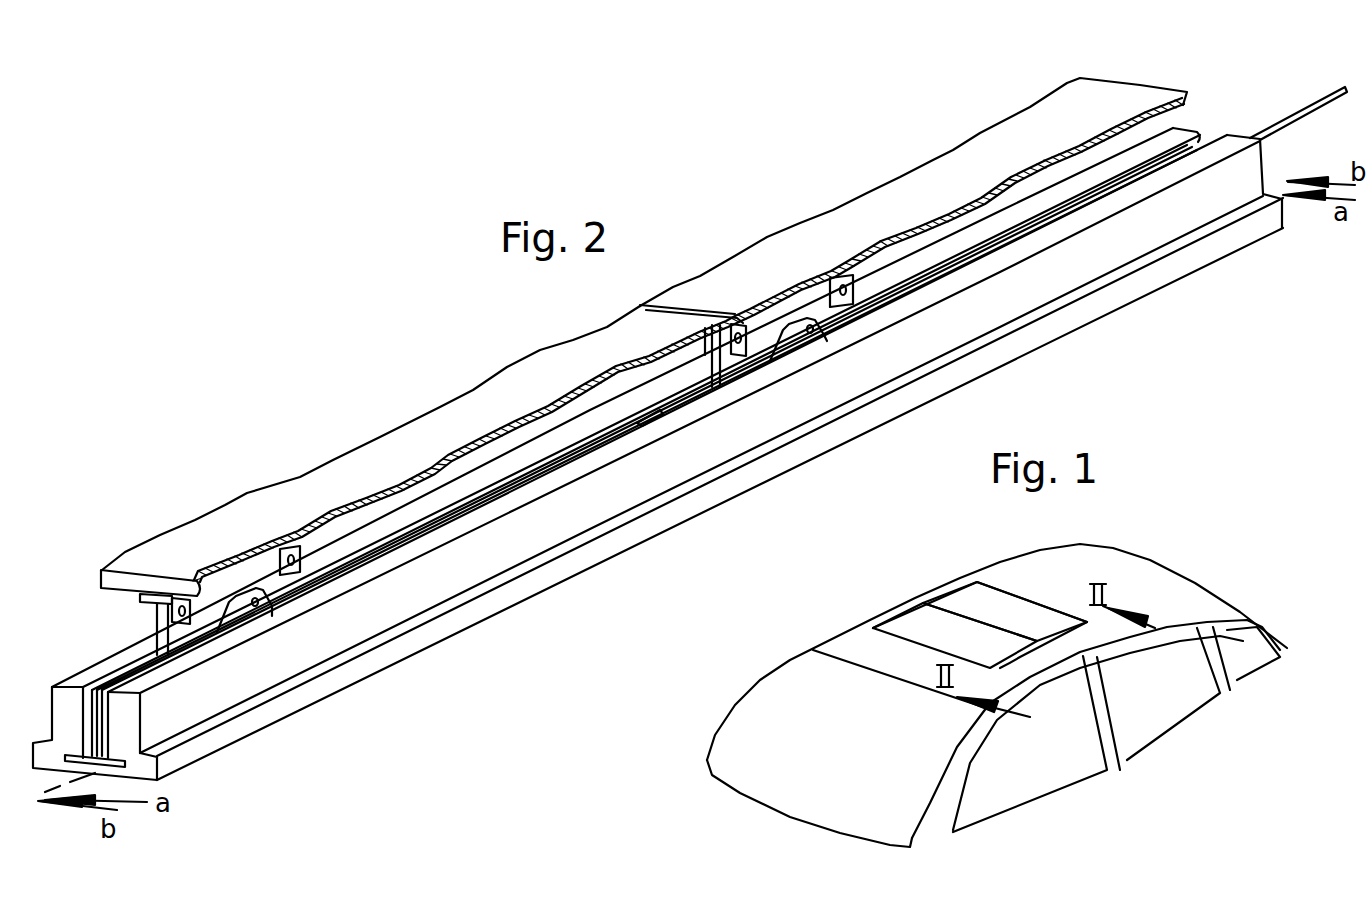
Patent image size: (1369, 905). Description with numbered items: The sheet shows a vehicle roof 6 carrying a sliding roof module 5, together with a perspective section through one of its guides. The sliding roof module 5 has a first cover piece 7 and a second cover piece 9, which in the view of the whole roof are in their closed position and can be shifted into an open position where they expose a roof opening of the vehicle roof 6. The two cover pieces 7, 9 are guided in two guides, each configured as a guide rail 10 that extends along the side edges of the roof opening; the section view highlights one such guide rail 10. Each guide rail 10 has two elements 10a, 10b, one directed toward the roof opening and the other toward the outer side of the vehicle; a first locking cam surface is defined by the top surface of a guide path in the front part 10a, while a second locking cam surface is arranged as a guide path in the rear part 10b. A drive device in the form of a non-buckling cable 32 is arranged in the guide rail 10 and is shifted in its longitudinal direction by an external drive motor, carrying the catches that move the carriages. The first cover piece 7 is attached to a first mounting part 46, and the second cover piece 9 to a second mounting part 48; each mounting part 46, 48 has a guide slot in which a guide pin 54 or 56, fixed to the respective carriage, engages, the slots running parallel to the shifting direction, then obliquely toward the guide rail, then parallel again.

In FIG. 1, the sliding roof module 5 is at (982, 578).
In FIG. 1, the vehicle roof 6 is at (1030, 567).
In FIG. 2, the first cover piece 7 is at (393, 440).
In FIG. 1, the first cover piece 7 is at (897, 620).
In FIG. 2, the second cover piece 9 is at (933, 177).
In FIG. 1, the second cover piece 9 is at (950, 593).
In FIG. 2, the guide rail 10 is at (655, 461).
In FIG. 2, the front part of the guide rail 10a is at (130, 718).
In FIG. 2, the rear part of the guide rail 10b is at (73, 700).
In FIG. 2, the non-buckling cable 32 is at (1307, 103).
In FIG. 2, the first mounting part 46 is at (237, 580).
In FIG. 2, the second mounting part 48 is at (787, 313).
In FIG. 2, the guide pin 54 is at (258, 606).
In FIG. 2, the guide pin 56 is at (815, 337).